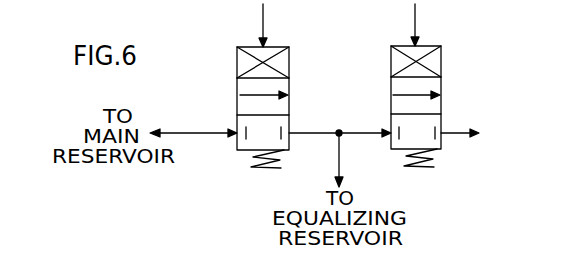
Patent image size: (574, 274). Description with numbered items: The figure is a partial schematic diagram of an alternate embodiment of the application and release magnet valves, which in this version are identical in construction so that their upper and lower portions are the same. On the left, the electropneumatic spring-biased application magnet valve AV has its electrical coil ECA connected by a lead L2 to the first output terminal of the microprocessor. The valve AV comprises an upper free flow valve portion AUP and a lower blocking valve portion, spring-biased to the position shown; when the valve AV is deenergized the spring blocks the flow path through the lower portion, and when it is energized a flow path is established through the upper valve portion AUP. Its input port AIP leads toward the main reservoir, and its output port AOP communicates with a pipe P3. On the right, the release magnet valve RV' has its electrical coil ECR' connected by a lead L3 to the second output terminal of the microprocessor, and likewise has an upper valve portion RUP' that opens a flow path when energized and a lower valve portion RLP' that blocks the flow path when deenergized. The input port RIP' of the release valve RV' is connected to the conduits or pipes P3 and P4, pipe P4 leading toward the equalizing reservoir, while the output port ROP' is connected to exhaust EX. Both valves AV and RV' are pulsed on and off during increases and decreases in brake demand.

The application magnet valve AV is at (237, 78).
The electrical coil of application magnet valve ECA is at (258, 51).
The lead L2 is at (263, 15).
The upper valve portion of application magnet valve AUP is at (241, 95).
The input port of application magnet valve AIP is at (240, 130).
The output port of application magnet valve AOP is at (281, 140).
The pipe P3 is at (339, 120).
The pipe P4 is at (339, 160).
The release magnet valve RV' is at (440, 97).
The electrical coil of release magnet valve ECR' is at (434, 47).
The lead L3 is at (415, 15).
The upper valve portion of release magnet valve RUP' is at (448, 88).
The input port of release magnet valve RIP' is at (369, 120).
The output port of release magnet valve ROP' is at (452, 120).
The lower valve portion of release magnet valve RLP' is at (454, 155).
The exhaust EX is at (480, 131).